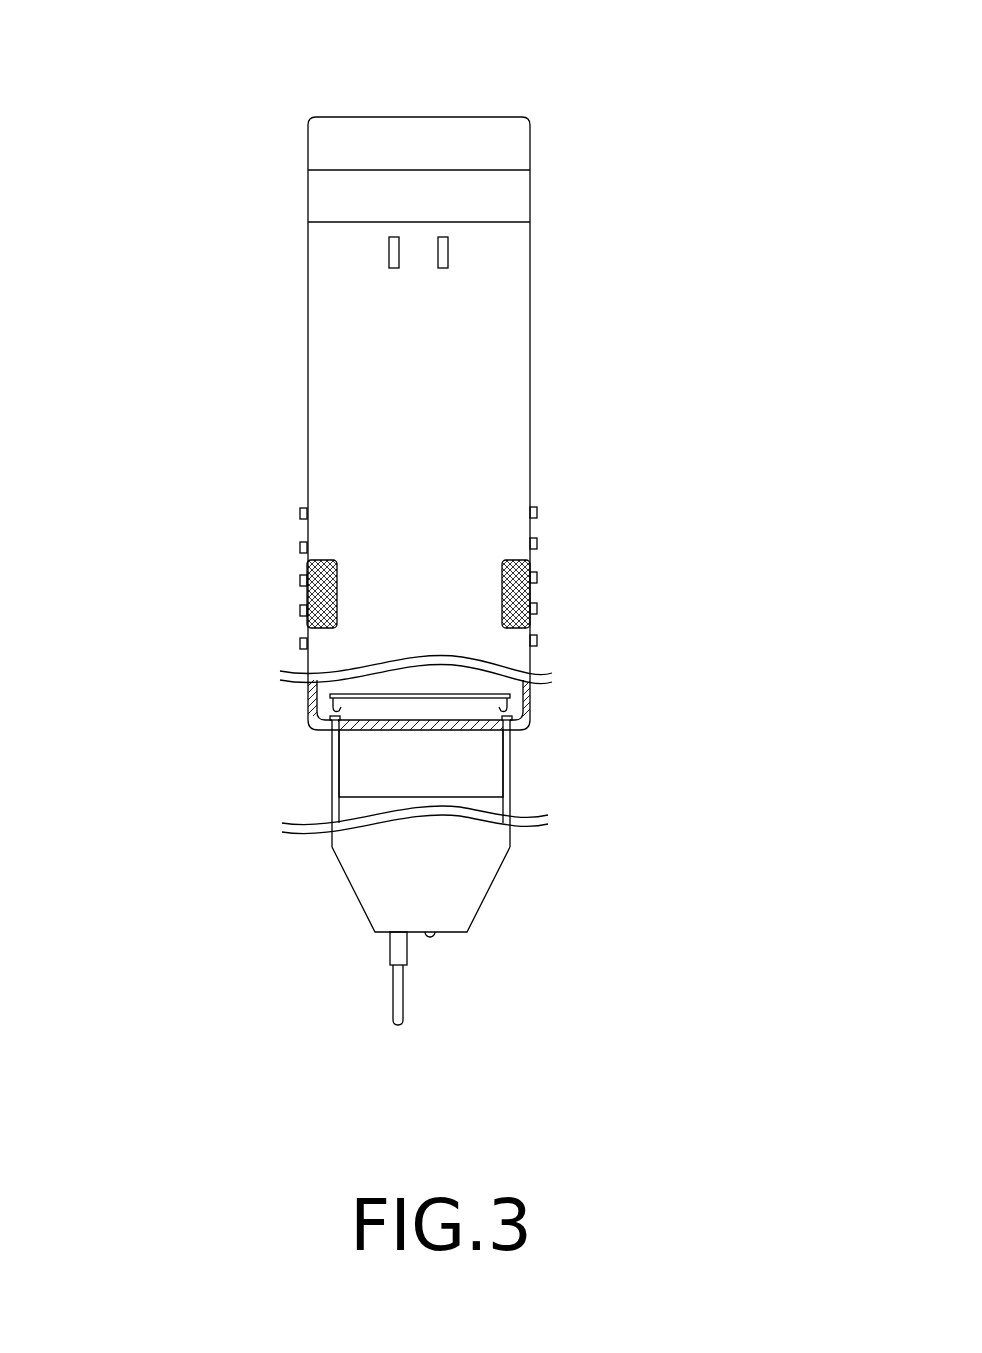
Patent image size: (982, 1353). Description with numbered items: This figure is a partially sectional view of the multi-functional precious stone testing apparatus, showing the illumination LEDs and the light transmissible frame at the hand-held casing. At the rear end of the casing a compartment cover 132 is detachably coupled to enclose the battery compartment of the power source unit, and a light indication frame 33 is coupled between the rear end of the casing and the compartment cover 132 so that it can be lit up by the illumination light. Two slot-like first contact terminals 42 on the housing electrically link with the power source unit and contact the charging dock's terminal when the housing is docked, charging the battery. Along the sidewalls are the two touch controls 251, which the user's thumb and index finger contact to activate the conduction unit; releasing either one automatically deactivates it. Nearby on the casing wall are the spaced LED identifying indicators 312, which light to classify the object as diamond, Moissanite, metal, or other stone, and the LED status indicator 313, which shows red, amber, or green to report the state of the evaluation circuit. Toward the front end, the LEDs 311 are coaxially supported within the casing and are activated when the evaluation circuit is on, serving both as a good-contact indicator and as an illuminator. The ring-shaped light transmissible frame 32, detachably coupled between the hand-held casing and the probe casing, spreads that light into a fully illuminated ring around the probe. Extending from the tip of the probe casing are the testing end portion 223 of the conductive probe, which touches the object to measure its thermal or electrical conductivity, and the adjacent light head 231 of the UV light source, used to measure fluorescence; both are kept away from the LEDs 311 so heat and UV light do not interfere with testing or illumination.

The compartment cover 132 is at (472, 143).
The light indication frame 33 is at (502, 198).
The first contact terminal 42 is at (393, 250).
The LED identifying indicators 312 is at (536, 508).
The LED status indicator 313 is at (538, 637).
The touch controls 251 is at (535, 543).
The LEDs 311 is at (330, 718).
The light transmissible frame 32 is at (507, 760).
The testing end portion 223 is at (398, 995).
The light head 231 is at (433, 938).